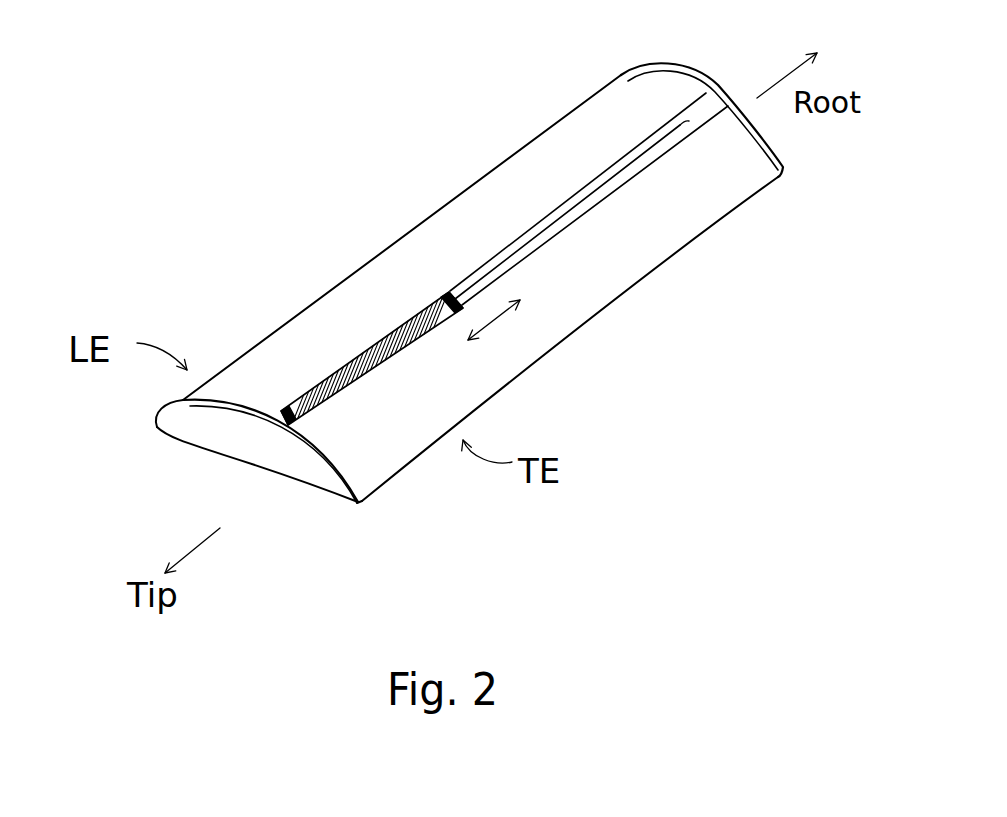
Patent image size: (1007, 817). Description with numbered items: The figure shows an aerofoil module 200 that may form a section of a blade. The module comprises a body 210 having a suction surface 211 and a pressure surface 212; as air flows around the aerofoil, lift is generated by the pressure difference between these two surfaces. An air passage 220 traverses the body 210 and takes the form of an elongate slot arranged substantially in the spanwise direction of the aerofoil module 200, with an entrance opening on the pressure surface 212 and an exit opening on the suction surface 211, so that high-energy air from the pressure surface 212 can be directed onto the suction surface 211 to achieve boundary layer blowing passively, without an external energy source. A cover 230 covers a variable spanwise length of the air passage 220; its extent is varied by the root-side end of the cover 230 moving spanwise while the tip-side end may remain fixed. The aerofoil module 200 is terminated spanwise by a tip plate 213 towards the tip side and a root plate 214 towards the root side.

The aerofoil module 200 is at (283, 177).
The body 210 is at (278, 357).
The suction surface 211 is at (308, 332).
The pressure surface 212 is at (250, 468).
The tip plate 213 is at (187, 422).
The root plate 214 is at (693, 70).
The air passage 220 is at (573, 203).
The cover 230 is at (387, 360).